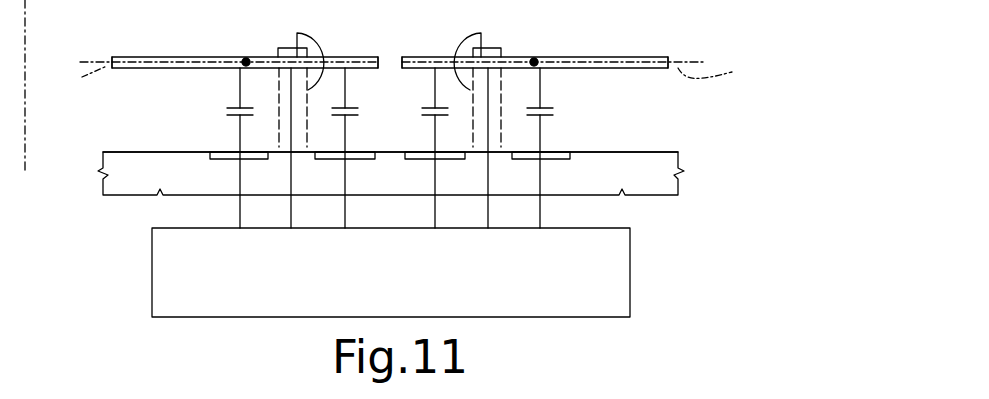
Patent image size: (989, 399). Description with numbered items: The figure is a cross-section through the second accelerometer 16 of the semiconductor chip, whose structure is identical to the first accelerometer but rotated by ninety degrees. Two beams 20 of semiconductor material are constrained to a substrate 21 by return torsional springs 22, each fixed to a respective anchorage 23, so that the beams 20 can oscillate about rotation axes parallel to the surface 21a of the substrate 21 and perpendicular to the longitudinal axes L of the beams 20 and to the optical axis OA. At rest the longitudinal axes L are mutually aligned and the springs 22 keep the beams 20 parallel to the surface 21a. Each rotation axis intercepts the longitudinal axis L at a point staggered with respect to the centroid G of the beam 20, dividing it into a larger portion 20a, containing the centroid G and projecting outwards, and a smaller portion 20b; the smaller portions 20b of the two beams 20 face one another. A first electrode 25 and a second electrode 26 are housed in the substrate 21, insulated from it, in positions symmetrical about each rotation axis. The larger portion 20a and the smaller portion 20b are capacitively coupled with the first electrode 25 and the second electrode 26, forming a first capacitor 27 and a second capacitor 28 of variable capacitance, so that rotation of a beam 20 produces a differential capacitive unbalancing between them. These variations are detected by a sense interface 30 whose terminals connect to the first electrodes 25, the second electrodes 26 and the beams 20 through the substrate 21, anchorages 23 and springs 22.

The second accelerometer 16 is at (671, 222).
The beam 20 is at (203, 48).
The larger portion 20a is at (114, 57).
The smaller portion 20b is at (425, 57).
The substrate 21 is at (124, 196).
The surface 21a is at (140, 151).
The torsional spring 22 is at (320, 35).
The anchorage 23 is at (280, 47).
The first electrode 25 is at (227, 160).
The second electrode 26 is at (338, 160).
The first capacitor 27 is at (580, 115).
The second capacitor 28 is at (356, 108).
The sense interface 30 is at (158, 283).
The centroid G is at (244, 58).
The longitudinal axis L is at (405, 81).
The optical axis OA is at (28, 50).